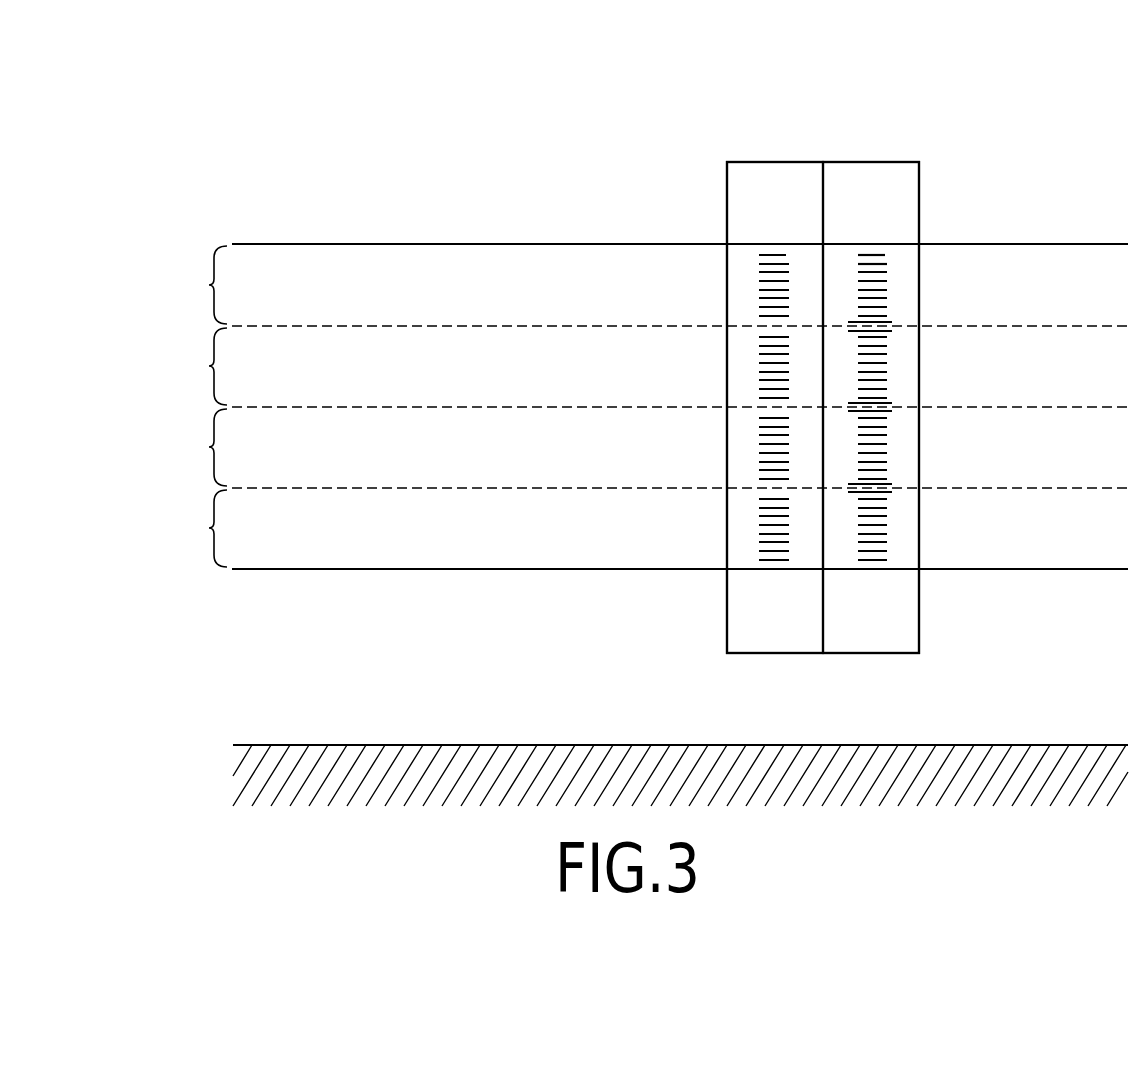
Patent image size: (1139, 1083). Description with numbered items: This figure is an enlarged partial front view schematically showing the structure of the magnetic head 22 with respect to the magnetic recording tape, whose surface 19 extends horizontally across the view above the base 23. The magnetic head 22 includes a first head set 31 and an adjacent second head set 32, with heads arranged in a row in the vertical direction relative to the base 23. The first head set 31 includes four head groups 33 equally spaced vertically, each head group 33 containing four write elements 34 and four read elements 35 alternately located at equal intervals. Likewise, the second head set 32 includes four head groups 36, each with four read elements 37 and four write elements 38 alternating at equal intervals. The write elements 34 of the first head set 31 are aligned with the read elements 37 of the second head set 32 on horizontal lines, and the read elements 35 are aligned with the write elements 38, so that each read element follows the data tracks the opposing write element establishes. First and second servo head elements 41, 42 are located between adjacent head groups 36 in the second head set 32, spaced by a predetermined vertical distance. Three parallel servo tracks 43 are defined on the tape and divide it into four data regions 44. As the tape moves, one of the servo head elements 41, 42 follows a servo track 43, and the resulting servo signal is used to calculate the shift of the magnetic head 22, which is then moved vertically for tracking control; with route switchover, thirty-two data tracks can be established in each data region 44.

The recording medium surface 19 is at (1054, 229).
The magnetic head 22 is at (746, 140).
The base 23 is at (1042, 745).
The first head set 31 is at (726, 201).
The second head set 32 is at (924, 213).
The head groups 33 is at (728, 303).
The write elements 34 is at (771, 255).
The read elements 35 is at (760, 264).
The head groups 36 is at (914, 247).
The read elements 37 is at (862, 255).
The write elements 38 is at (885, 264).
The first servo head element 41 is at (887, 322).
The second servo head element 42 is at (887, 331).
The servo tracks 43 is at (427, 326).
The data regions 44 is at (193, 406).